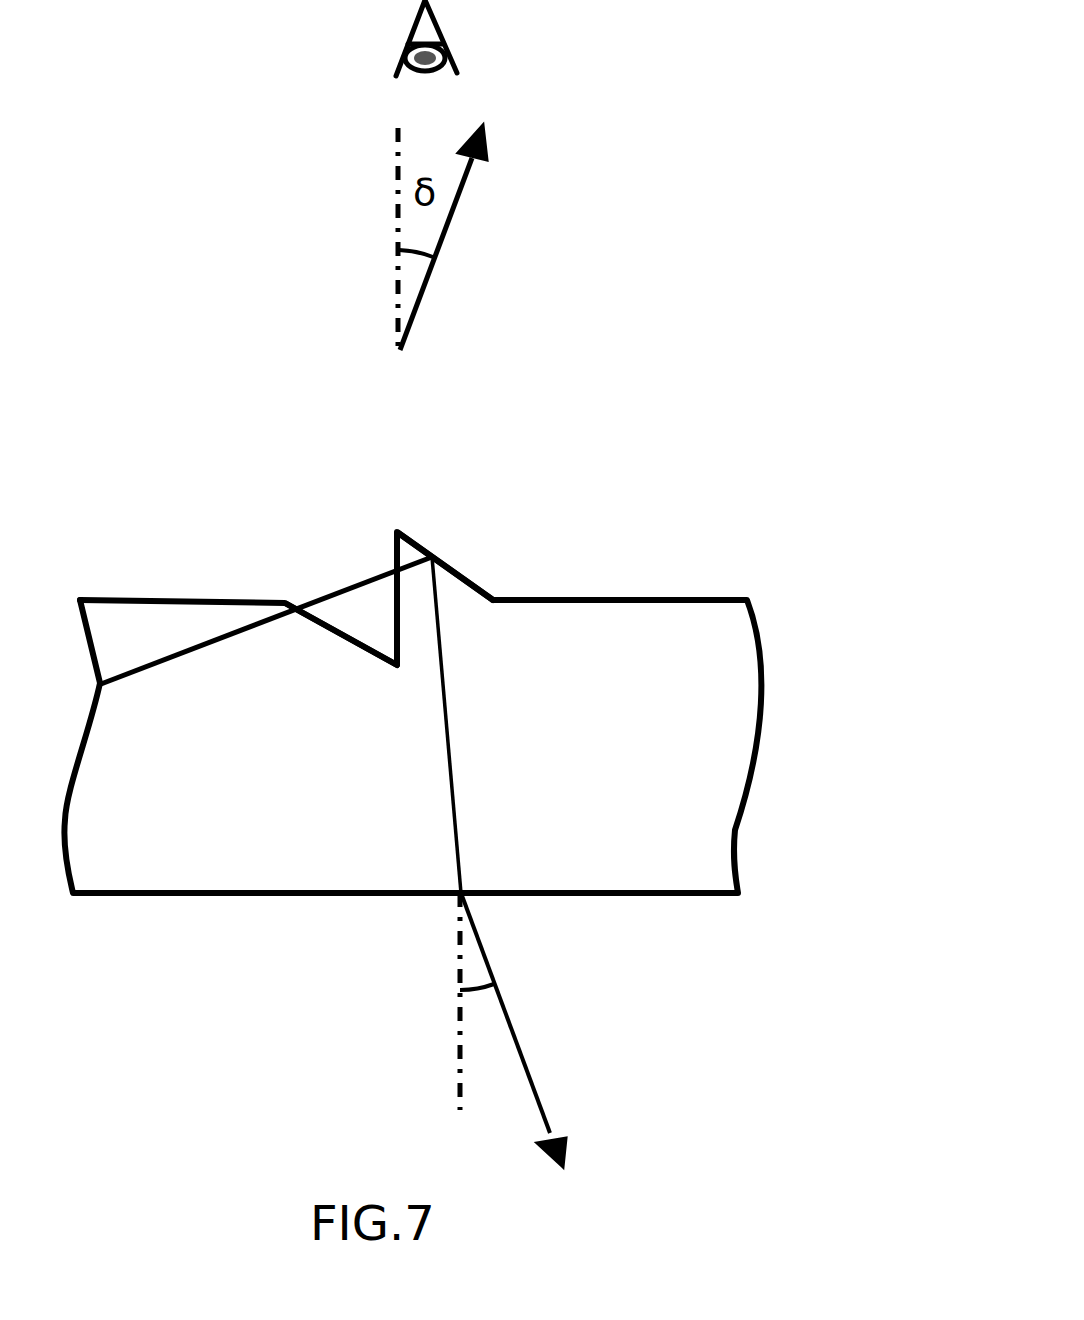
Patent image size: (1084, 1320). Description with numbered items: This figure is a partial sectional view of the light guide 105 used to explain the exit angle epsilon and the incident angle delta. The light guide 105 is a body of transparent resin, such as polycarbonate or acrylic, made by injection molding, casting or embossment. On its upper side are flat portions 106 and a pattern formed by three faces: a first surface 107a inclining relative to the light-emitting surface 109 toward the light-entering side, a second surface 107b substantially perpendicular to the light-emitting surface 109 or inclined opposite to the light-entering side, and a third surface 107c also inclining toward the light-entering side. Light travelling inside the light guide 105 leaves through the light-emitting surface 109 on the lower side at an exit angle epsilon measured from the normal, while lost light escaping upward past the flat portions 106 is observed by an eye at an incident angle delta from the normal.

The light guide 105 is at (693, 842).
The flat portions 106 is at (640, 600).
The first surface 107a is at (318, 633).
The second surface 107b is at (402, 640).
The third surface 107c is at (447, 563).
The light-emitting surface 109 is at (647, 893).